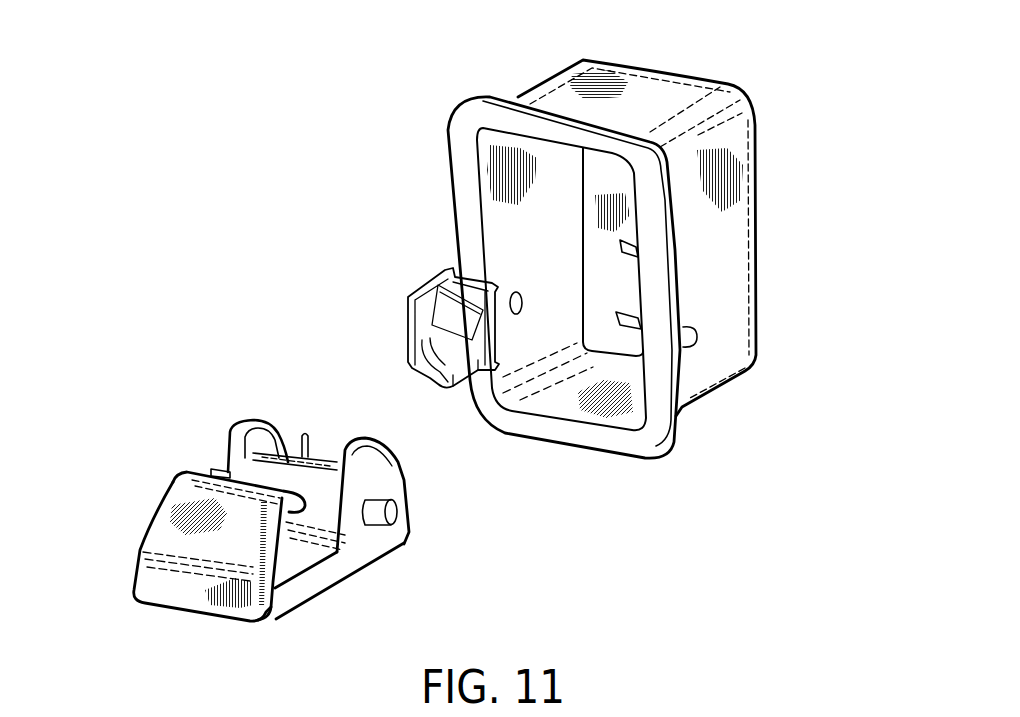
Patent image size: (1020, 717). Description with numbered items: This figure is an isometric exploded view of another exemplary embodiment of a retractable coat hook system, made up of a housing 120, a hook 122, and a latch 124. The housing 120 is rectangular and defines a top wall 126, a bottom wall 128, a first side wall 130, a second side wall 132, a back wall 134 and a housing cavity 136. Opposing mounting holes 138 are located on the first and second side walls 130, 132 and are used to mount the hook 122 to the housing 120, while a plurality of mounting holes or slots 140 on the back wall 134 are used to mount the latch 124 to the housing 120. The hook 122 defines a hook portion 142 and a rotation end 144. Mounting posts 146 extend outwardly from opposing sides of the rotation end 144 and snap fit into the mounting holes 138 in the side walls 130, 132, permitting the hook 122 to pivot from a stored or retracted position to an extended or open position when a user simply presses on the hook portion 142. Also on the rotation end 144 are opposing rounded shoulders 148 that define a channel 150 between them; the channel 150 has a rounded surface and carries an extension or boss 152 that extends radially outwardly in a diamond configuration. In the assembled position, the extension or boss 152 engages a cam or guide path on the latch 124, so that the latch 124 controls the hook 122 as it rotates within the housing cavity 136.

The housing 120 is at (735, 222).
The hook 122 is at (297, 582).
The latch 124 is at (422, 292).
The top wall 126 is at (656, 79).
The bottom wall 128 is at (708, 398).
The first side wall 130 is at (740, 277).
The second side wall 132 is at (542, 80).
The back wall 134 is at (756, 165).
The housing cavity 136 is at (549, 200).
The mounting holes 138 is at (517, 291).
The mounting holes or slots 140 is at (628, 328).
The hook portion 142 is at (160, 522).
The rotation end 144 is at (380, 533).
The mounting posts 146 is at (213, 468).
The rounded shoulders 148 is at (237, 423).
The channel 150 is at (330, 528).
The extension or boss 152 is at (305, 432).